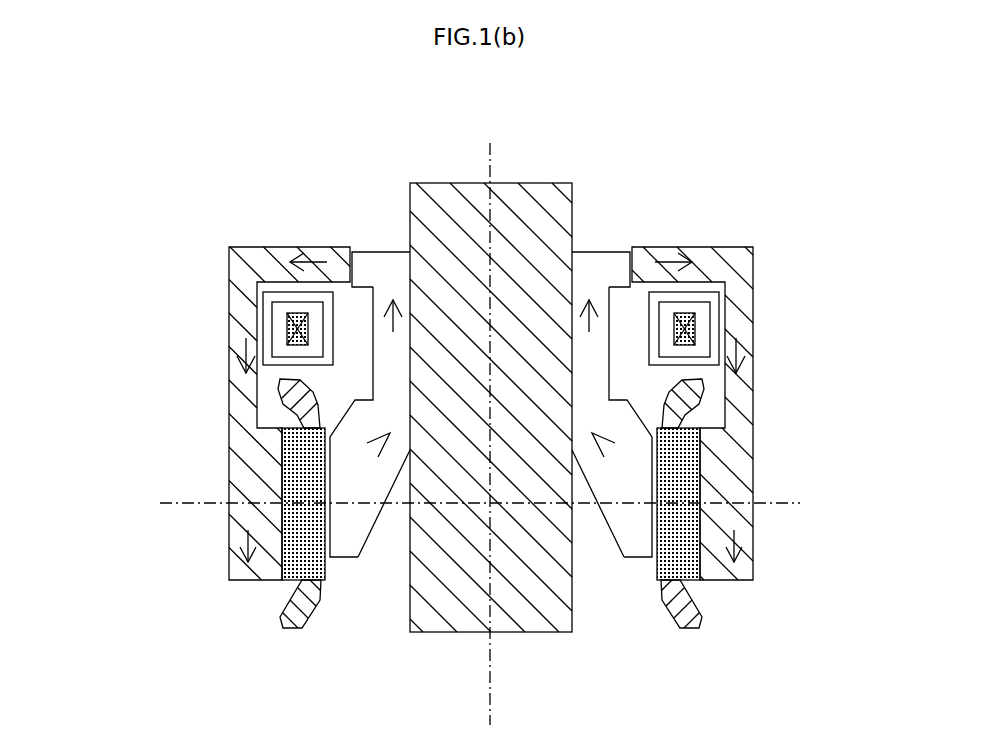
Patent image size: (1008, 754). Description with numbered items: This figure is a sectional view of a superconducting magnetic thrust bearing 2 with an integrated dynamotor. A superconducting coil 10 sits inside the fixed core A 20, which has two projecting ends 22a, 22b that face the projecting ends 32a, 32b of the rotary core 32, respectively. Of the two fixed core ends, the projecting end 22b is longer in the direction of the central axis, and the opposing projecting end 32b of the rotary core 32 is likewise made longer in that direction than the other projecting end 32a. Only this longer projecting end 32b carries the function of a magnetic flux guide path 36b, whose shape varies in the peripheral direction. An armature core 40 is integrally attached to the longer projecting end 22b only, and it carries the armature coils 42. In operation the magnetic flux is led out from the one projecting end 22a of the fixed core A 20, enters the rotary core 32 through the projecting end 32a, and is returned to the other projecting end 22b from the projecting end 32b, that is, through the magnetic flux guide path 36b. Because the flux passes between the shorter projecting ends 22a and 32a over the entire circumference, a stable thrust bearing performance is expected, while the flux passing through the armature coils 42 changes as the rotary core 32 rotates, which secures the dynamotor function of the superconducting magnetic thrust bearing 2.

The superconducting magnetic thrust bearing with integrated dynamotor 2 is at (575, 157).
The superconducting coil 10 is at (278, 302).
The fixed core A 20 is at (229, 287).
The projecting end 22a is at (345, 256).
The projecting end 22b is at (283, 466).
The rotary core 32 is at (410, 282).
The projecting end 32a is at (365, 267).
The projecting end 32b is at (345, 560).
The magnetic flux guide path 36b is at (365, 493).
The armature core 40 is at (278, 557).
The armature coil 42 is at (290, 628).